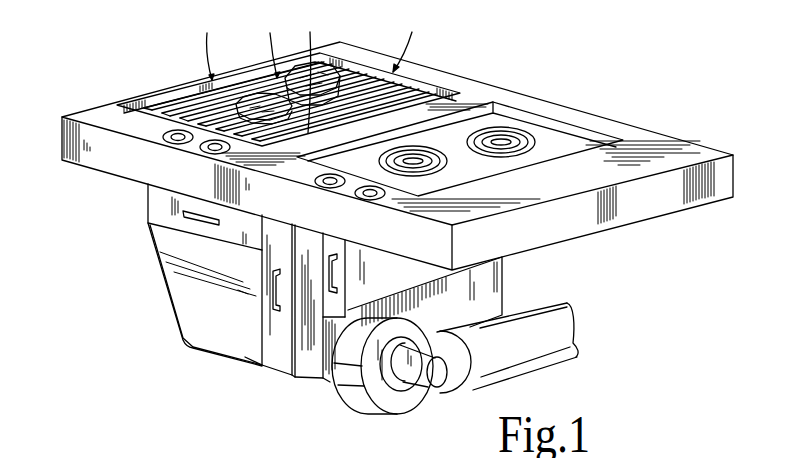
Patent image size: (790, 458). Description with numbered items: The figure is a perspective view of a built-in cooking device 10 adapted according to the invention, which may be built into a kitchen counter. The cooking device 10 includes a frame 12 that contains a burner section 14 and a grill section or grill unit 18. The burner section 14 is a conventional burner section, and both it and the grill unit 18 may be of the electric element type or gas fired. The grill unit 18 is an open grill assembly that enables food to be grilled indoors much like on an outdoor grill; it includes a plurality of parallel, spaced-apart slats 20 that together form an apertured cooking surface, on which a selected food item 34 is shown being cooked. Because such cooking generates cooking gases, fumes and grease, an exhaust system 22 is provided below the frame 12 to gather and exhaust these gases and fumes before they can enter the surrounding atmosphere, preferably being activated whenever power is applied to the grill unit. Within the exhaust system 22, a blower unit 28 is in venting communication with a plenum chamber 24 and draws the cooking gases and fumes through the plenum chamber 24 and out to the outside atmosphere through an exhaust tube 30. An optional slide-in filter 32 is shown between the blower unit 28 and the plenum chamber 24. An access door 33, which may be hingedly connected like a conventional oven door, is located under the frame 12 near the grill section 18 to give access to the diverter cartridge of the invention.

The cooking device 10 is at (510, 72).
The frame 12 is at (568, 112).
The burner section 14 is at (562, 143).
The grill section or grill unit 18 is at (288, 79).
The slats 20 is at (355, 72).
The exhaust system 22 is at (179, 275).
The plenum chamber 24 is at (166, 311).
The blower unit 28 is at (383, 403).
The exhaust tube 30 is at (530, 363).
The slide-in filter 32 is at (280, 368).
The access door 33 is at (150, 207).
The food item 34 is at (253, 98).